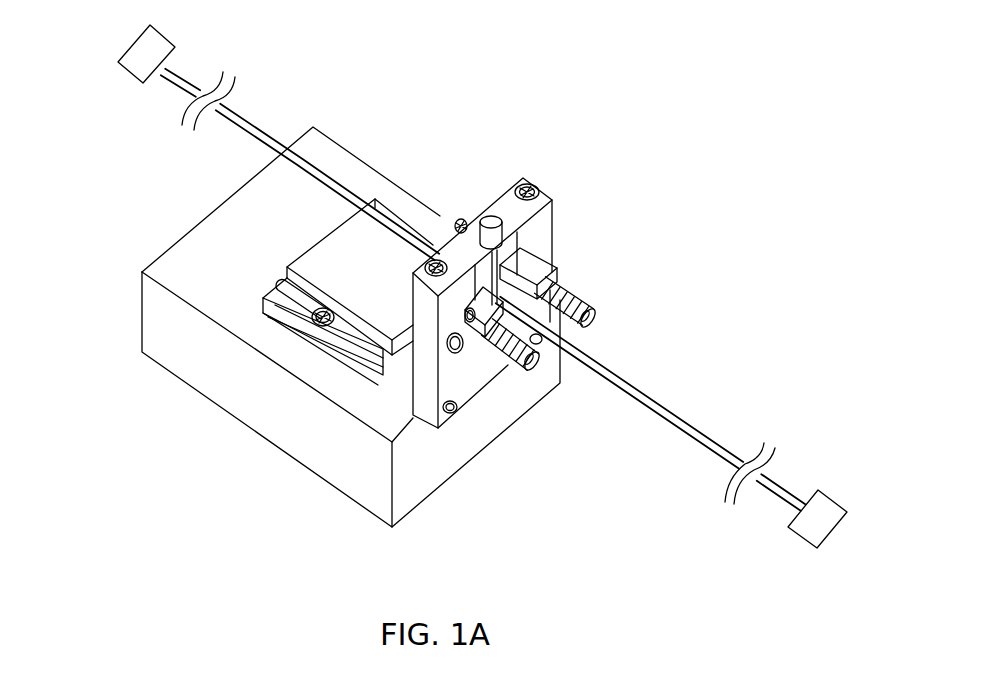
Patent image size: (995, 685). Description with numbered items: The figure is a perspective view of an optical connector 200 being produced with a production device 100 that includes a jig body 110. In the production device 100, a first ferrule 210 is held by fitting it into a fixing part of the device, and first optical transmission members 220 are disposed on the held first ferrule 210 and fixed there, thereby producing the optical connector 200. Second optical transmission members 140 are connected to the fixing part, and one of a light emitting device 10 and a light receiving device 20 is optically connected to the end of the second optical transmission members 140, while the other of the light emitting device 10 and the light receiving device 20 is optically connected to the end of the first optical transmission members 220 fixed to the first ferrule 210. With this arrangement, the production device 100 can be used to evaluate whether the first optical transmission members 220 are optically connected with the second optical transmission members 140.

The production device 100 is at (632, 120).
The jig body 110 is at (426, 216).
The second optical transmission members 140 is at (243, 127).
The light emitting device 10 is at (150, 54).
The light receiving device 20 is at (791, 527).
The optical connector 200 is at (710, 222).
The first ferrule 210 is at (545, 266).
The first optical transmission members 220 is at (602, 345).